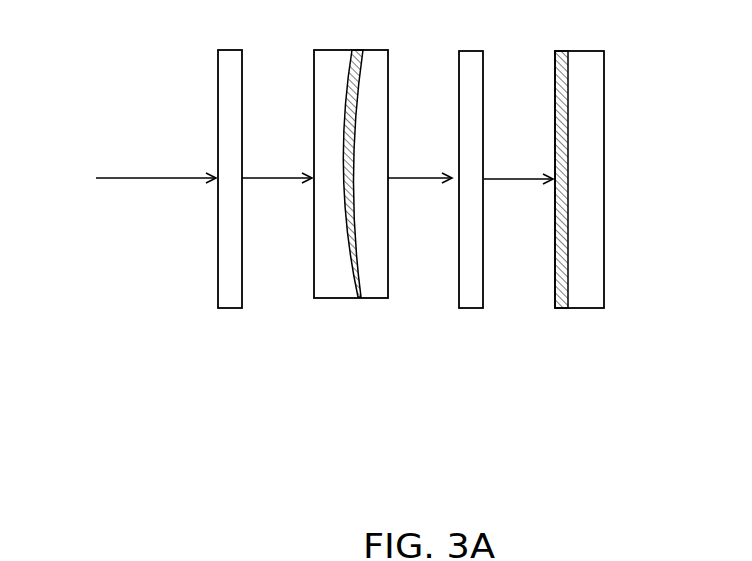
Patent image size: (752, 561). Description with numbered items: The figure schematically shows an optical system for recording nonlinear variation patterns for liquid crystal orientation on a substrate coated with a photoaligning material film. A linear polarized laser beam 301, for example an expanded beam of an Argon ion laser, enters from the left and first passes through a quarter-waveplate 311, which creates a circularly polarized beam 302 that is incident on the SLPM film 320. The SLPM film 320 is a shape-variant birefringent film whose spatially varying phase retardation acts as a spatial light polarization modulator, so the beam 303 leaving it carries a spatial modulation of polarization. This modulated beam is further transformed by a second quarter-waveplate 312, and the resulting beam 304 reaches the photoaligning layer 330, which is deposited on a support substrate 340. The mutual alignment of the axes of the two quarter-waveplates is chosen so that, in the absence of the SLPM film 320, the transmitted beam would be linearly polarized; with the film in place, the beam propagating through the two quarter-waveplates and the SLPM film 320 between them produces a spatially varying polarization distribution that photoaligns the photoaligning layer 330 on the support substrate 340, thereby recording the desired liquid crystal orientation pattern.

The linear polarized laser beam 301 is at (167, 176).
The light beam after first polarizer 302 is at (279, 175).
The light beam after lens 303 is at (434, 175).
The light beam after second polarizer 304 is at (531, 176).
The quarter-waveplate 311 is at (233, 286).
The second quarter-waveplate 312 is at (470, 291).
The SLPM film 320 is at (352, 280).
The photoaligning layer 330 is at (558, 306).
The support substrate 340 is at (585, 215).